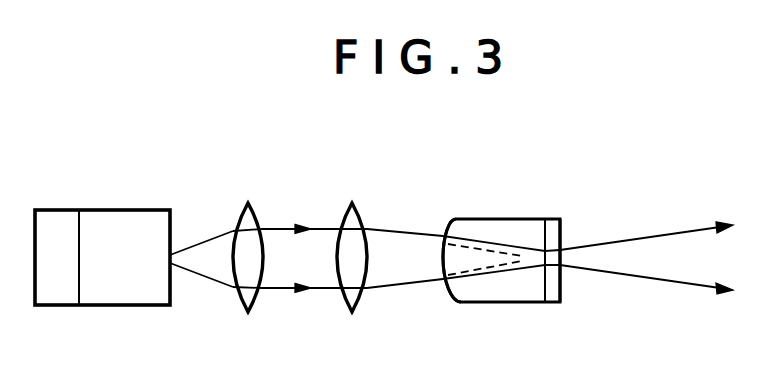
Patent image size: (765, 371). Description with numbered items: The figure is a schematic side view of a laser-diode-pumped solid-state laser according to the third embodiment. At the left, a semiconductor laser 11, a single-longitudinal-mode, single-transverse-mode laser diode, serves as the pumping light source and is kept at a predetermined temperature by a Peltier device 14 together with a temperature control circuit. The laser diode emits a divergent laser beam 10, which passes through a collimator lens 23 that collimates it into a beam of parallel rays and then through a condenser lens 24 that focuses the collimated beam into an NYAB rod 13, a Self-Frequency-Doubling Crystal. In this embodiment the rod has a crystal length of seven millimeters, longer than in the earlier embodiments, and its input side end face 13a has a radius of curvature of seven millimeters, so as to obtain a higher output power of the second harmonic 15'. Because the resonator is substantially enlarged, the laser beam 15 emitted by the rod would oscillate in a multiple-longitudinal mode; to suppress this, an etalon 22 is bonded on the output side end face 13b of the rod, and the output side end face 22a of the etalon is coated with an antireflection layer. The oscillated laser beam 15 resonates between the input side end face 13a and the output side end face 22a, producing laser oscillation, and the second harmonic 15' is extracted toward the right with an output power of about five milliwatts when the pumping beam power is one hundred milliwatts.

The laser beam 10 is at (206, 278).
The semiconductor laser 11 is at (128, 222).
The NYAB rod 13 is at (507, 205).
The input side end face 13a is at (434, 262).
The output side end face 13b is at (546, 232).
The Peltier device 14 is at (60, 222).
The laser beam 15 is at (501, 294).
The second harmonic 15' is at (646, 287).
The etalon 22 is at (543, 309).
The output side end face of the etalon 22a is at (563, 284).
The collimator lens 23 is at (240, 216).
The condenser lens 24 is at (343, 214).